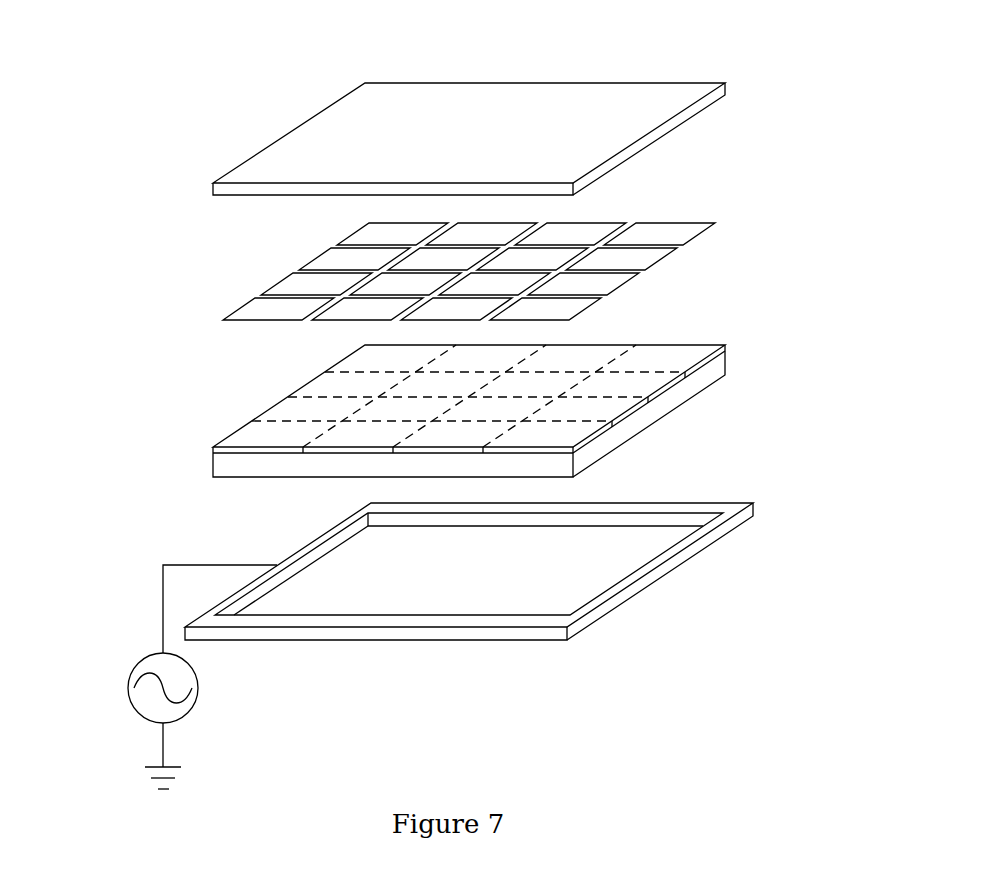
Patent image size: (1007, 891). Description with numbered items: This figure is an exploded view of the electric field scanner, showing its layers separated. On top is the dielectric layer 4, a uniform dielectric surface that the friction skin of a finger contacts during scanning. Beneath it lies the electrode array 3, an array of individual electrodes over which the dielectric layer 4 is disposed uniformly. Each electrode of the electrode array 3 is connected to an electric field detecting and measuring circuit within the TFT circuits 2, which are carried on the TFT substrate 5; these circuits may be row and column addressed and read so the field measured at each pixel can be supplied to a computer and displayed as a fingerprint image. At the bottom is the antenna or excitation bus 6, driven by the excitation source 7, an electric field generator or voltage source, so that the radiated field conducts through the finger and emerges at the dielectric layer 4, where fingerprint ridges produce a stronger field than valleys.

The TFT circuits 2 is at (539, 367).
The electrode array 3 is at (547, 252).
The dielectric layer 4 is at (537, 134).
The TFT substrate 5 is at (541, 400).
The antenna or excitation bus 6 is at (527, 535).
The excitation source 7 is at (154, 677).